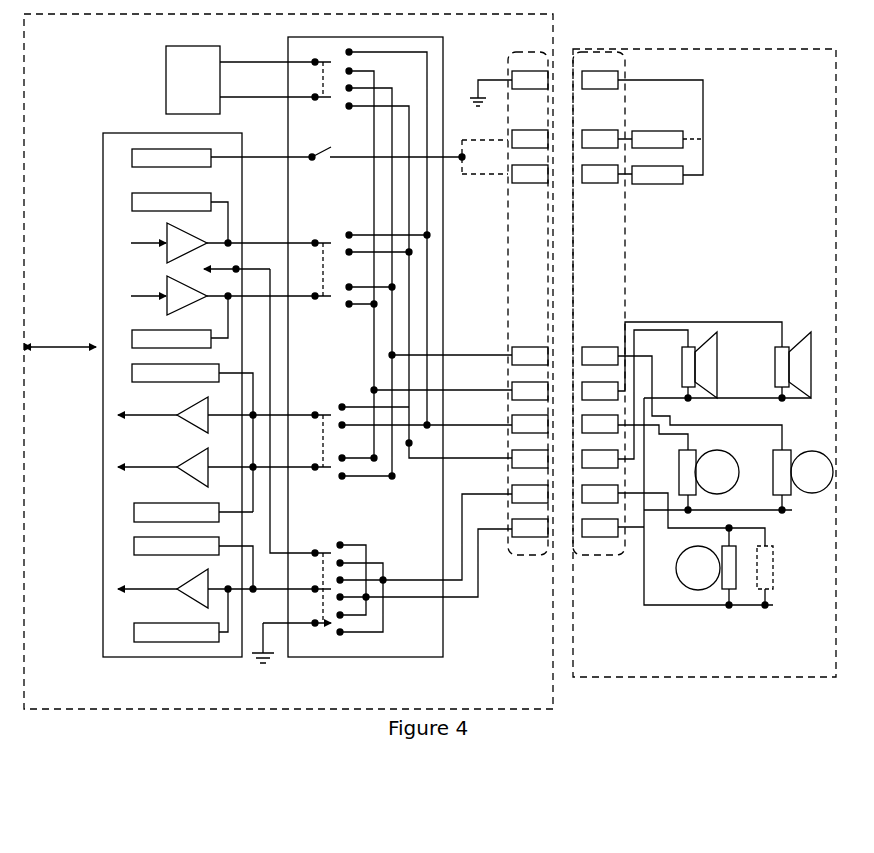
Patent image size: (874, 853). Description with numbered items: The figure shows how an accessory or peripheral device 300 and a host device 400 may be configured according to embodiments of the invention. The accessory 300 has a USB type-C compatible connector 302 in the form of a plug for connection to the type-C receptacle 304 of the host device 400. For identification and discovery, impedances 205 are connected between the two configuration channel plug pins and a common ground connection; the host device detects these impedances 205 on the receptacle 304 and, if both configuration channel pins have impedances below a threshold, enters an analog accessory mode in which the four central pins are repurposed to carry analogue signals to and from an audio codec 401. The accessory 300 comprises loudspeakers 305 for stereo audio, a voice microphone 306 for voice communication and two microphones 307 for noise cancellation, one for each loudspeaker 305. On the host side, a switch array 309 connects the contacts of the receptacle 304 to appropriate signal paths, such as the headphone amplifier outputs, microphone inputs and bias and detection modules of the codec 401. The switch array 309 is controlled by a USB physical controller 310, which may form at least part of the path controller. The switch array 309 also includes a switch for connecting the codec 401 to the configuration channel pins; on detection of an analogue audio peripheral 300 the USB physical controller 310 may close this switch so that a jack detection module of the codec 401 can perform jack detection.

The host device 400 is at (288, 361).
The USB physical controller 310 is at (193, 80).
The audio codec 401 is at (103, 578).
The switch array 309 is at (385, 657).
The type-C receptacle 304 is at (517, 558).
The accessory or peripheral device 300 is at (704, 363).
The USB type-C compatible connector 302 is at (626, 249).
The impedances 205 is at (637, 130).
The loudspeakers 305 is at (774, 360).
The microphones for noise cancellation 307 is at (722, 447).
The voice microphone 306 is at (676, 583).